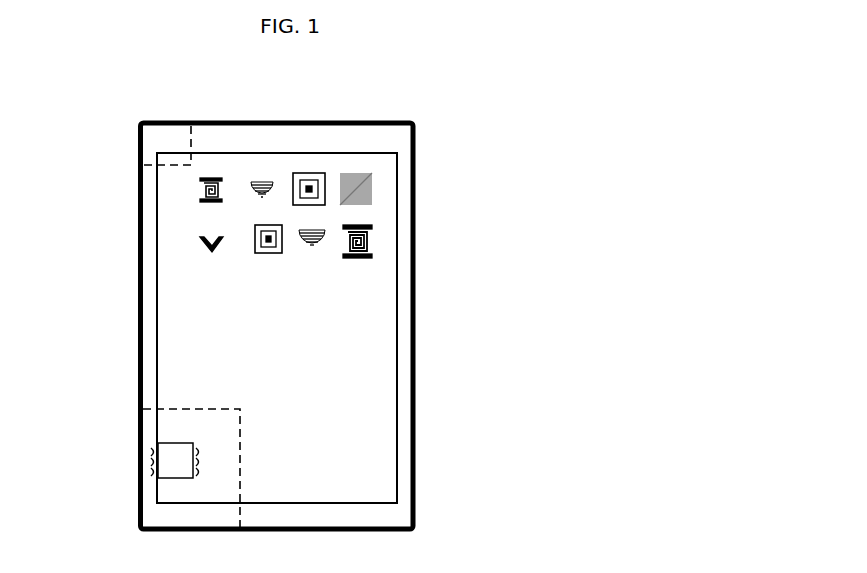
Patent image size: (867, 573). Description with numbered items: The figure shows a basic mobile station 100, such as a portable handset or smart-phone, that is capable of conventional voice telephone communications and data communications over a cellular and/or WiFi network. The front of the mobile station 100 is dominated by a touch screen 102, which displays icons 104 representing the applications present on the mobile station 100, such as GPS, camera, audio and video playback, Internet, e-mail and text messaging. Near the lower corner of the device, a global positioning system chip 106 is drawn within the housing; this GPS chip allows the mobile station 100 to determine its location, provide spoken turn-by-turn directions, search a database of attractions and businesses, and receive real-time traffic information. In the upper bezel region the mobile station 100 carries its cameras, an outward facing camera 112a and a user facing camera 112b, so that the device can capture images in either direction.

The mobile station 100 is at (434, 118).
The touch screen 102 is at (277, 328).
The icons 104 is at (200, 217).
The global positioning system (GPS) chip 106 is at (178, 462).
The outward facing camera 112a is at (157, 140).
The user facing camera 112b is at (280, 138).